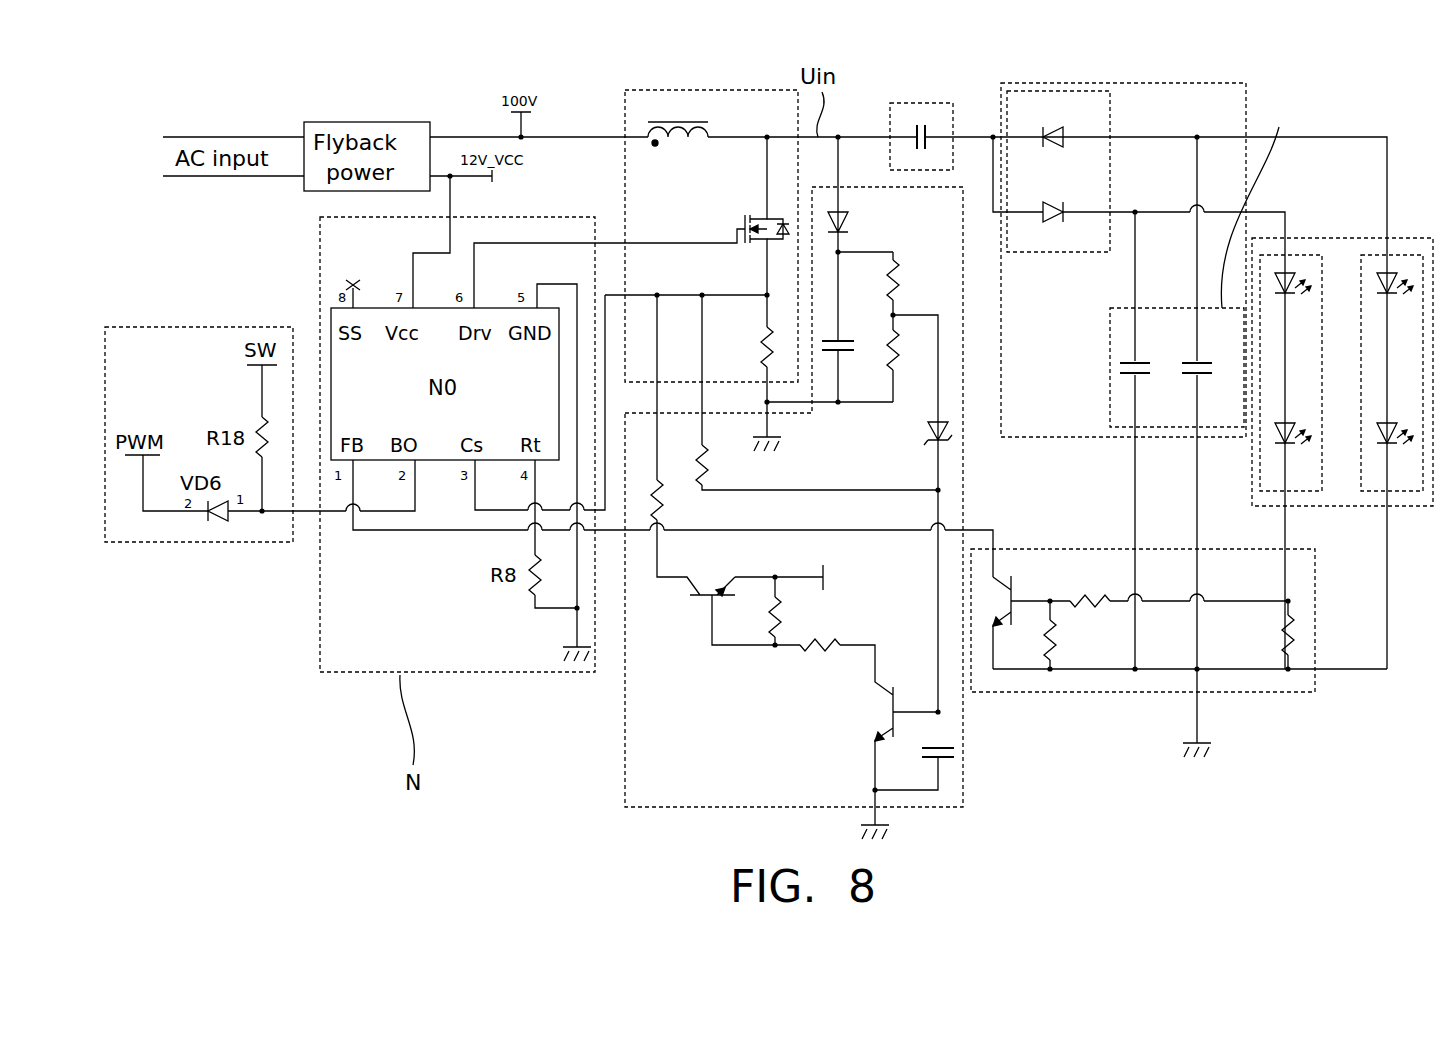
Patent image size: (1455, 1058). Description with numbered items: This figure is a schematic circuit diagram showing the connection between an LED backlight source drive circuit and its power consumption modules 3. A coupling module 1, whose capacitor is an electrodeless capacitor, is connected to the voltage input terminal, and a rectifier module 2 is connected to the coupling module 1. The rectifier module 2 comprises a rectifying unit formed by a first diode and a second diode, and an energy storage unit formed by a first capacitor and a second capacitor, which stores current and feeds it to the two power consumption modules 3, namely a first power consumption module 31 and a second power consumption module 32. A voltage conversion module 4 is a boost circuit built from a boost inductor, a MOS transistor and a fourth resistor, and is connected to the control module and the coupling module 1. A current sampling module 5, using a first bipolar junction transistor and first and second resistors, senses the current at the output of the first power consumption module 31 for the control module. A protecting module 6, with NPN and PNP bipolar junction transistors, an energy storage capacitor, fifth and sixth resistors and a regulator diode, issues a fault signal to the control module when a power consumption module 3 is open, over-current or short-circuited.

The coupling module 1 is at (890, 122).
The rectifier module 2 is at (1248, 93).
The power consumption module 3 is at (1412, 238).
The voltage conversion module 4 is at (625, 108).
The current sampling module 5 is at (1075, 697).
The protecting module 6 is at (625, 752).
The first power consumption module 31 is at (1318, 492).
The second power consumption module 32 is at (1412, 492).